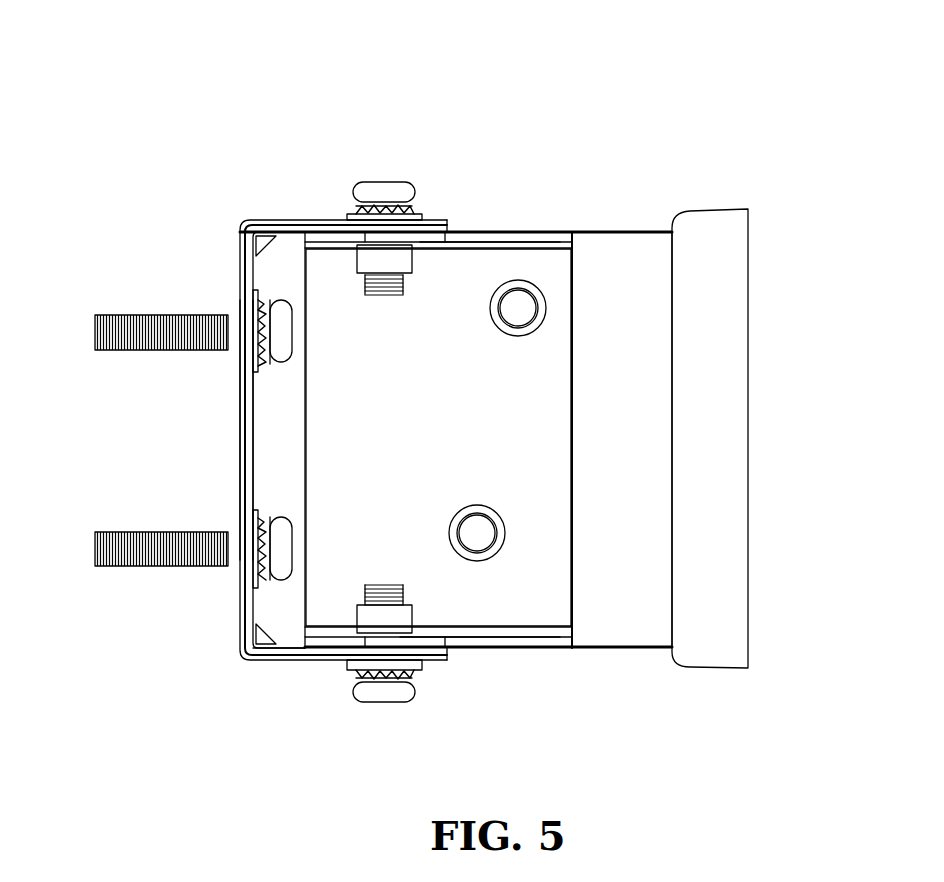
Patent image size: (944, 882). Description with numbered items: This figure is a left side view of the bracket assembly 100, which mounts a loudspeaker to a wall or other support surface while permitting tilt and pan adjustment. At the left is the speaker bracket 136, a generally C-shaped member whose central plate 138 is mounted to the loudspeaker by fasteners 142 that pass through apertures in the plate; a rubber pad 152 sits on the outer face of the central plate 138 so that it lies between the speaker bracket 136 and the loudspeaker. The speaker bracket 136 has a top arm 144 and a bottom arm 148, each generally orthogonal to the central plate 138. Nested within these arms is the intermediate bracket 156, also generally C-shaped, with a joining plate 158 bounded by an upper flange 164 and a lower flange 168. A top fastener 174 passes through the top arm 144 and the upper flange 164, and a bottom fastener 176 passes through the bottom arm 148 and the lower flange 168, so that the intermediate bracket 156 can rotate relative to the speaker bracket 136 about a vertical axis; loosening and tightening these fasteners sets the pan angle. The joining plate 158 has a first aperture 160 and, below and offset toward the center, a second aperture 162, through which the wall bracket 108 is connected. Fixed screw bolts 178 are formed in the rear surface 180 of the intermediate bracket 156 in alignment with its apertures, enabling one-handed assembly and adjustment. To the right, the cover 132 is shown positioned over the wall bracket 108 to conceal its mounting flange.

The bracket assembly 100 is at (215, 78).
The wall bracket 108 is at (618, 228).
The cover 132 is at (752, 440).
The speaker bracket 136 is at (288, 215).
The central plate 138 is at (253, 436).
The fastener 142 is at (140, 315).
The top arm 144 is at (303, 228).
The bottom arm 148 is at (300, 660).
The pad 152 is at (243, 438).
The intermediate bracket 156 is at (470, 276).
The joining plate 158 is at (460, 597).
The first aperture 160 is at (518, 308).
The second aperture 162 is at (478, 533).
The upper flange 164 is at (478, 245).
The lower flange 168 is at (432, 614).
The top fastener 174 is at (388, 180).
The bottom fastener 176 is at (386, 703).
The fixed screw bolts 178 is at (356, 265).
The rear surface 180 is at (446, 474).